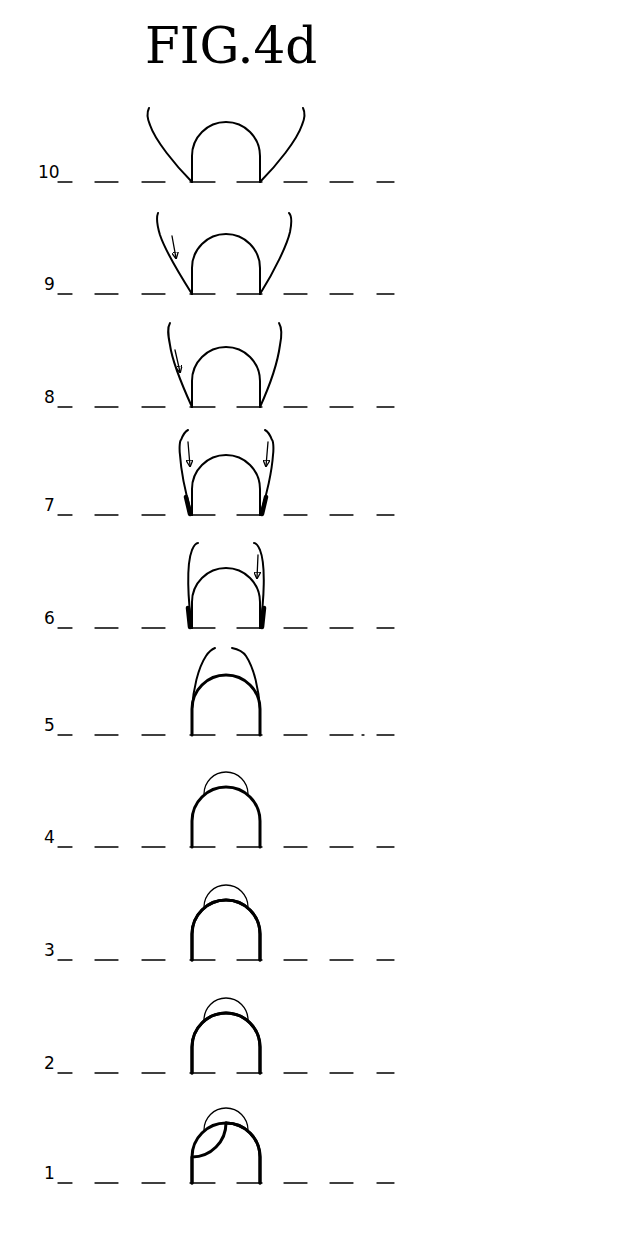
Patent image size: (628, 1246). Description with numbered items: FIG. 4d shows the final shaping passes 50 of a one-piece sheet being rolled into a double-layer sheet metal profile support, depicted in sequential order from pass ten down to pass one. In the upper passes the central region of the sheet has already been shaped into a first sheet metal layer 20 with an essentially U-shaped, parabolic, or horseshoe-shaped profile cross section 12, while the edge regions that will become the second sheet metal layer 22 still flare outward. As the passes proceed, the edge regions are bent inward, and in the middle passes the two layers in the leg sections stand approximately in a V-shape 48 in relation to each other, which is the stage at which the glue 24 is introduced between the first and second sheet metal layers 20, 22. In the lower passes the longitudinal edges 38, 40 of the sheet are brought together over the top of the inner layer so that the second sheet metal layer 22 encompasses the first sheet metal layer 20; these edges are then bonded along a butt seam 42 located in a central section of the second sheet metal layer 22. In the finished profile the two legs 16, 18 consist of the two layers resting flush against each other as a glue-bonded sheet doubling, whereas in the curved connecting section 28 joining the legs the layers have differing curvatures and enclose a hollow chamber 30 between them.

The profile cross section 12 is at (249, 927).
The leg 16 is at (187, 1161).
The leg 18 is at (273, 1163).
The first sheet metal layer 20 is at (232, 233).
The second sheet metal layer 22 is at (300, 150).
The glue 24 is at (266, 505).
The connecting section 28 is at (228, 1137).
The hollow chamber 30 is at (232, 1004).
The longitudinal edge 38 is at (205, 653).
The longitudinal edge 40 is at (236, 650).
The butt seam 42 is at (230, 879).
The V-shape 48 is at (166, 230).
The passes 50 is at (47, 134).